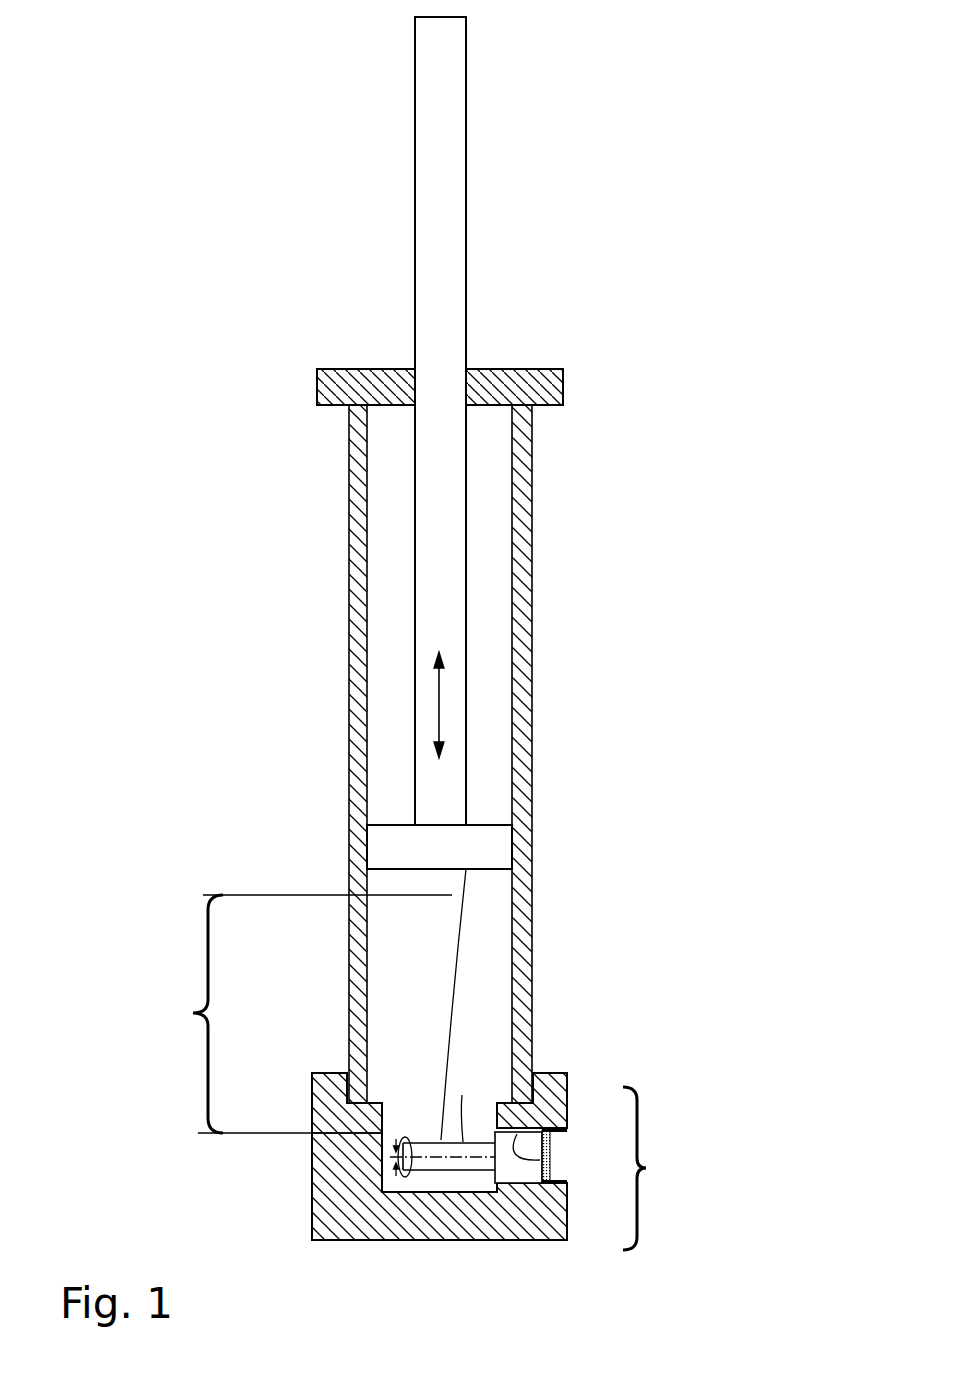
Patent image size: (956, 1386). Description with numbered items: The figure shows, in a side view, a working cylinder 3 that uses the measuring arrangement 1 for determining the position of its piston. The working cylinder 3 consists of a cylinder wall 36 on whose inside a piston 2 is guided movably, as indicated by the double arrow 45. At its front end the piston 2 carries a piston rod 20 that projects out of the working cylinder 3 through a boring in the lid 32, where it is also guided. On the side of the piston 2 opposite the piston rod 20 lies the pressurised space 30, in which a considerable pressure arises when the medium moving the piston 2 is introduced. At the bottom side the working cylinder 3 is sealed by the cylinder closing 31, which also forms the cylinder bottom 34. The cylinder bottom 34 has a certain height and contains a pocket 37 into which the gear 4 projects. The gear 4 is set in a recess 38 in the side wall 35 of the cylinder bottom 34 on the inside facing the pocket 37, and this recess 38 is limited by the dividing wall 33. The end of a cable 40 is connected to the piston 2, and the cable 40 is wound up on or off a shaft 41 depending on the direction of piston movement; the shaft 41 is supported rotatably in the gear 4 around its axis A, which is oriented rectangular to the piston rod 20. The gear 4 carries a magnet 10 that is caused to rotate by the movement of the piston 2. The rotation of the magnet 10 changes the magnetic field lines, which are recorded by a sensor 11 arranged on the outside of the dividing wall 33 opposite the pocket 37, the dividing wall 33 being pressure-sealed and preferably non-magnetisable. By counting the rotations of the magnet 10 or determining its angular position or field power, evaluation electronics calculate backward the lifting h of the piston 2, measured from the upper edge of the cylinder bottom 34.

The measuring arrangement 1 is at (409, 1079).
The piston 2 is at (490, 848).
The working cylinder 3 is at (357, 531).
The gear 4 is at (540, 1217).
The magnet 10 is at (523, 1125).
The sensor 11 is at (557, 1168).
The piston rod 20 is at (448, 247).
The pressurised space 30 is at (432, 946).
The cylinder closing 31 is at (317, 1157).
The lid 32 is at (550, 383).
The dividing wall 33 is at (527, 1183).
The cylinder bottom 34 is at (375, 1239).
The side wall 35 is at (659, 1168).
The cylinder wall 36 is at (528, 603).
The pocket 37 is at (415, 1180).
The recess 38 is at (500, 1188).
The cable 40 is at (467, 915).
The shaft 41 is at (462, 1095).
The double arrow 45 is at (440, 702).
The axis A is at (453, 1157).
The lifting h is at (192, 1014).